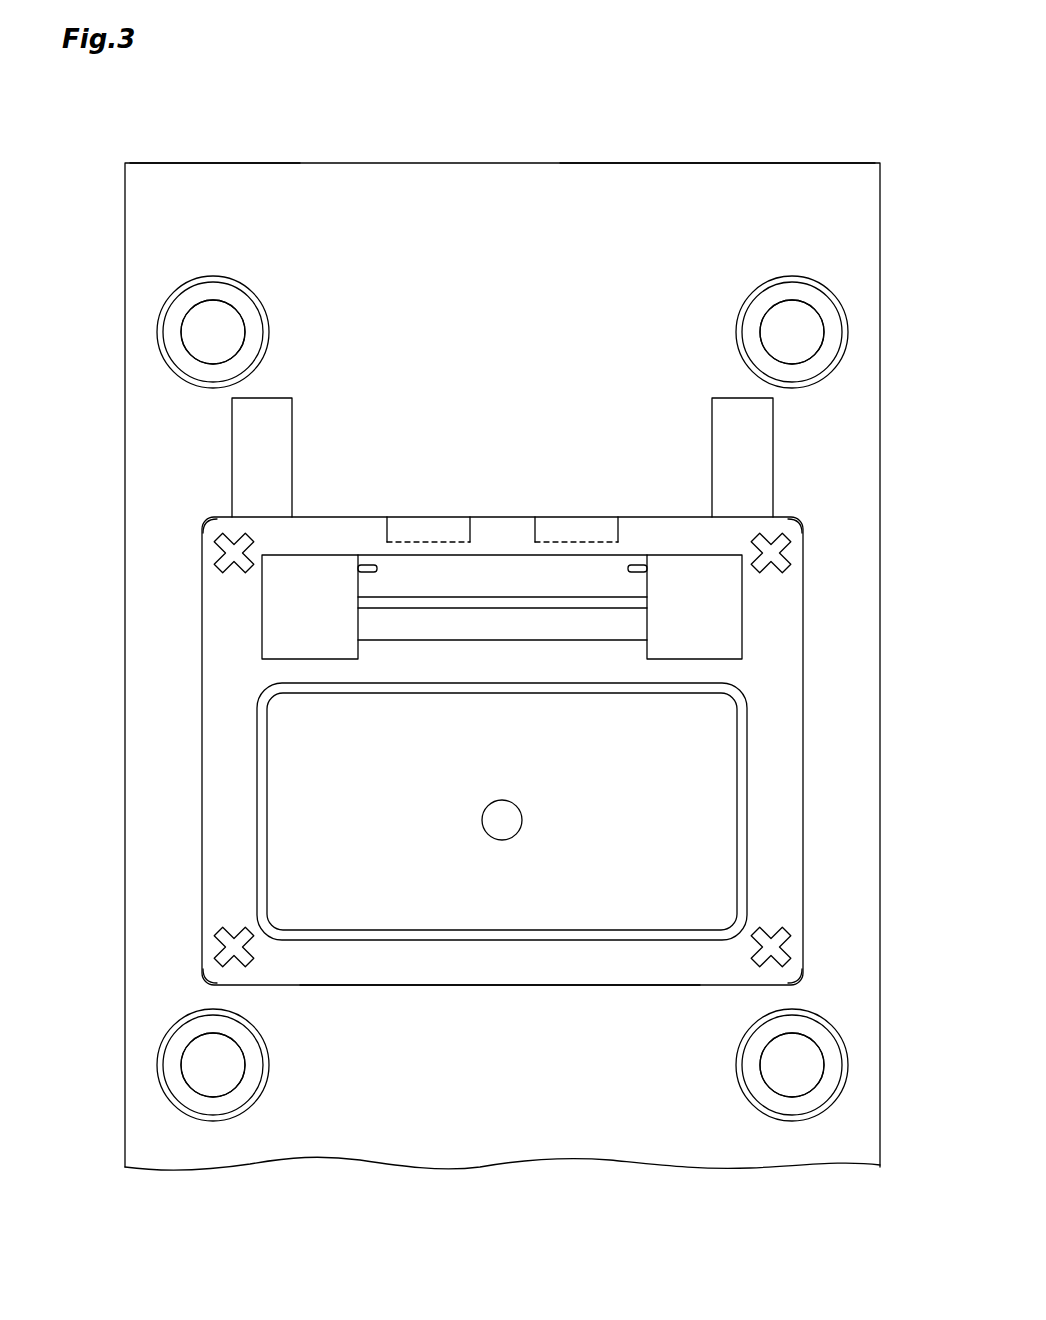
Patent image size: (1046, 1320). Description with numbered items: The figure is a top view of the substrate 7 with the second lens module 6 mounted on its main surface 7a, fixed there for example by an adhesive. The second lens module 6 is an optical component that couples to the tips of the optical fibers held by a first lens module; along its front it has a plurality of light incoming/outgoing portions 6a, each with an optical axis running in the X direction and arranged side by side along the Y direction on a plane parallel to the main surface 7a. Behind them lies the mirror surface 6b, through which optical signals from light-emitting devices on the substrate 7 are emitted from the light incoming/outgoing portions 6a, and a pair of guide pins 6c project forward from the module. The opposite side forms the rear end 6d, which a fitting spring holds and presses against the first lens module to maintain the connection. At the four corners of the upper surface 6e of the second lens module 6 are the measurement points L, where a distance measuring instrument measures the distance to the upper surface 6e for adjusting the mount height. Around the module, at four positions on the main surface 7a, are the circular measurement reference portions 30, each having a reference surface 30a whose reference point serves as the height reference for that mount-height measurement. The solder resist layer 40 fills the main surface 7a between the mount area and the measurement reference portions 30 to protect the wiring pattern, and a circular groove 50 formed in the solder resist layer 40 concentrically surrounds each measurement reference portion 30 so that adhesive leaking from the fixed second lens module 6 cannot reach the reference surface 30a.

The substrate 7 is at (125, 232).
The main surface 7a is at (650, 195).
The solder resist layer 40 is at (177, 185).
The groove 50 is at (163, 316).
The measurement reference portion 30 is at (190, 341).
The reference surface 30a is at (205, 348).
The second lens module 6 is at (803, 614).
The light incoming/outgoing portion 6a is at (425, 530).
The mirror surface 6b is at (551, 610).
The guide pin 6c is at (258, 460).
The rear end 6d is at (502, 970).
The upper surface 6e is at (228, 858).
The measurement point L is at (232, 556).